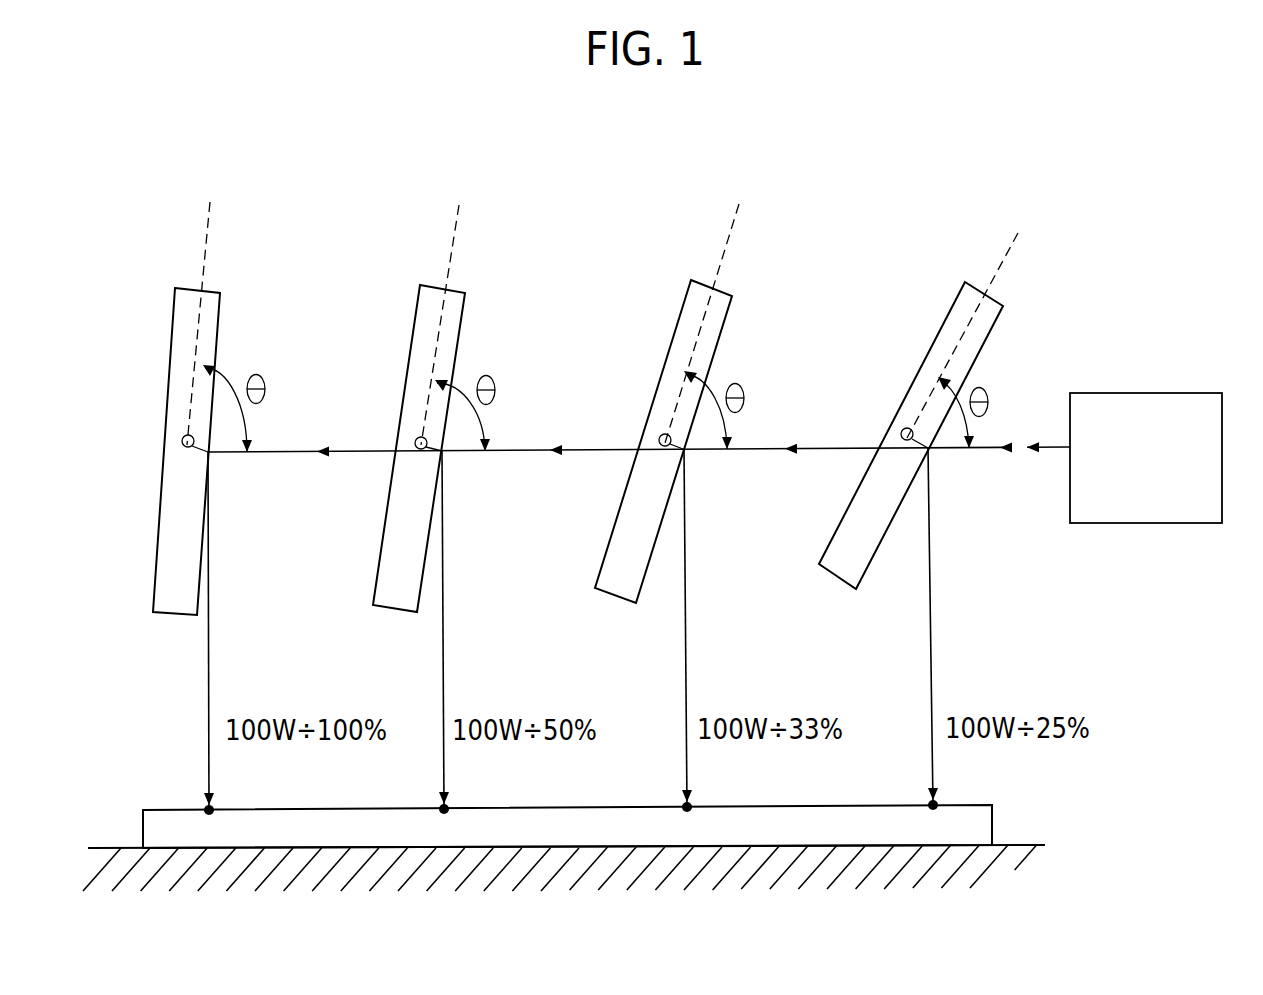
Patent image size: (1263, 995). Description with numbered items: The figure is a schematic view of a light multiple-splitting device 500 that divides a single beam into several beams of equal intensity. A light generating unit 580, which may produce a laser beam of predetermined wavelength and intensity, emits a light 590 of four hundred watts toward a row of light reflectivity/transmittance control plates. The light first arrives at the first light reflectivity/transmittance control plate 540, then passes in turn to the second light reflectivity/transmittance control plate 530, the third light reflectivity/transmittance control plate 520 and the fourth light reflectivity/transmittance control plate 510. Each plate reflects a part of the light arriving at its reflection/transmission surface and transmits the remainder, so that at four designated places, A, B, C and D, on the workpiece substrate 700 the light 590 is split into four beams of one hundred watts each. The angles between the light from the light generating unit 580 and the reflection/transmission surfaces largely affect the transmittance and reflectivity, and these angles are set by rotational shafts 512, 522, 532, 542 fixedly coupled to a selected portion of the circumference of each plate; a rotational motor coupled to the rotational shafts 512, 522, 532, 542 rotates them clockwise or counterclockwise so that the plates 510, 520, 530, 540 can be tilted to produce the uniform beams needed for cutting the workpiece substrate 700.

The light multiple-splitting device 500 is at (1149, 194).
The fourth light reflectivity/transmittance control plate 510 is at (213, 315).
The rotational shaft 512 is at (208, 455).
The third light reflectivity/transmittance control plate 520 is at (464, 309).
The rotational shaft 522 is at (442, 454).
The second light reflectivity/transmittance control plate 530 is at (728, 306).
The rotational shaft 532 is at (684, 452).
The first light reflectivity/transmittance control plate 540 is at (1000, 298).
The rotational shaft 542 is at (929, 451).
The light generating unit 580 is at (1115, 393).
The light 590 is at (1055, 447).
The workpiece substrate 700 is at (992, 818).